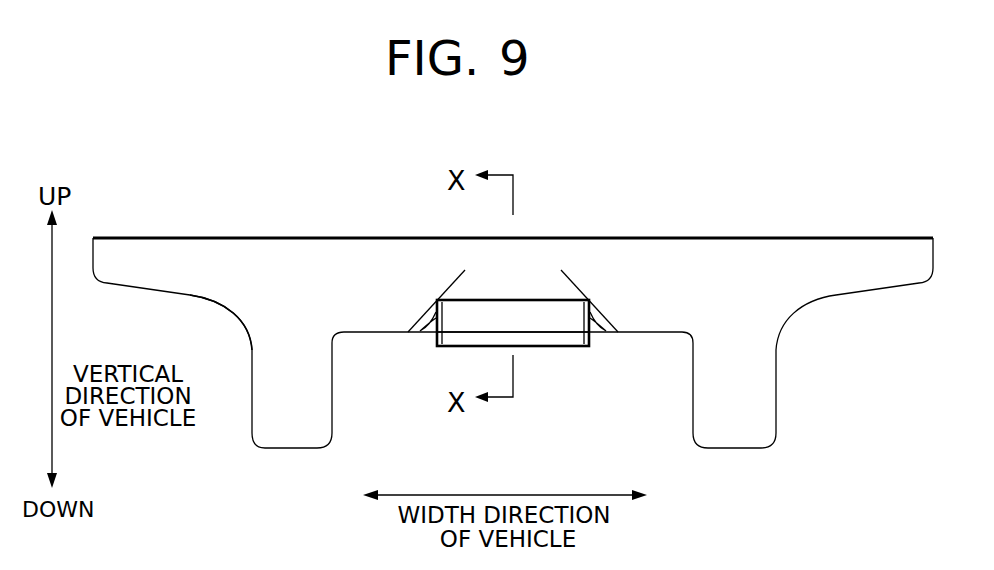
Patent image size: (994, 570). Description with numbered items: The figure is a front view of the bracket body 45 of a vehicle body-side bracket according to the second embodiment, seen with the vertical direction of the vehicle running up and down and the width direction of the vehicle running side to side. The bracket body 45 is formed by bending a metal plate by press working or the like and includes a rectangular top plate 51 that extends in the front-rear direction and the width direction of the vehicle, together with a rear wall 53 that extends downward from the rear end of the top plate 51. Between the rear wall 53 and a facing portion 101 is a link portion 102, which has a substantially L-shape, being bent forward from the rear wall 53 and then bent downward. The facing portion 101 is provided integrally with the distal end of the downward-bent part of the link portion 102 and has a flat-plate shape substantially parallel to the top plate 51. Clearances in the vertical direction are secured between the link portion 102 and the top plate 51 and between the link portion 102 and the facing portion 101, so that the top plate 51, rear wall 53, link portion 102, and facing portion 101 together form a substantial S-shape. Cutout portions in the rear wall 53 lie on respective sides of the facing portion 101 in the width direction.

The bracket body 45 is at (513, 285).
The top plate 51 is at (327, 238).
The rear wall 53 is at (238, 308).
The facing portion 101 is at (562, 340).
The link portion 102 is at (447, 318).